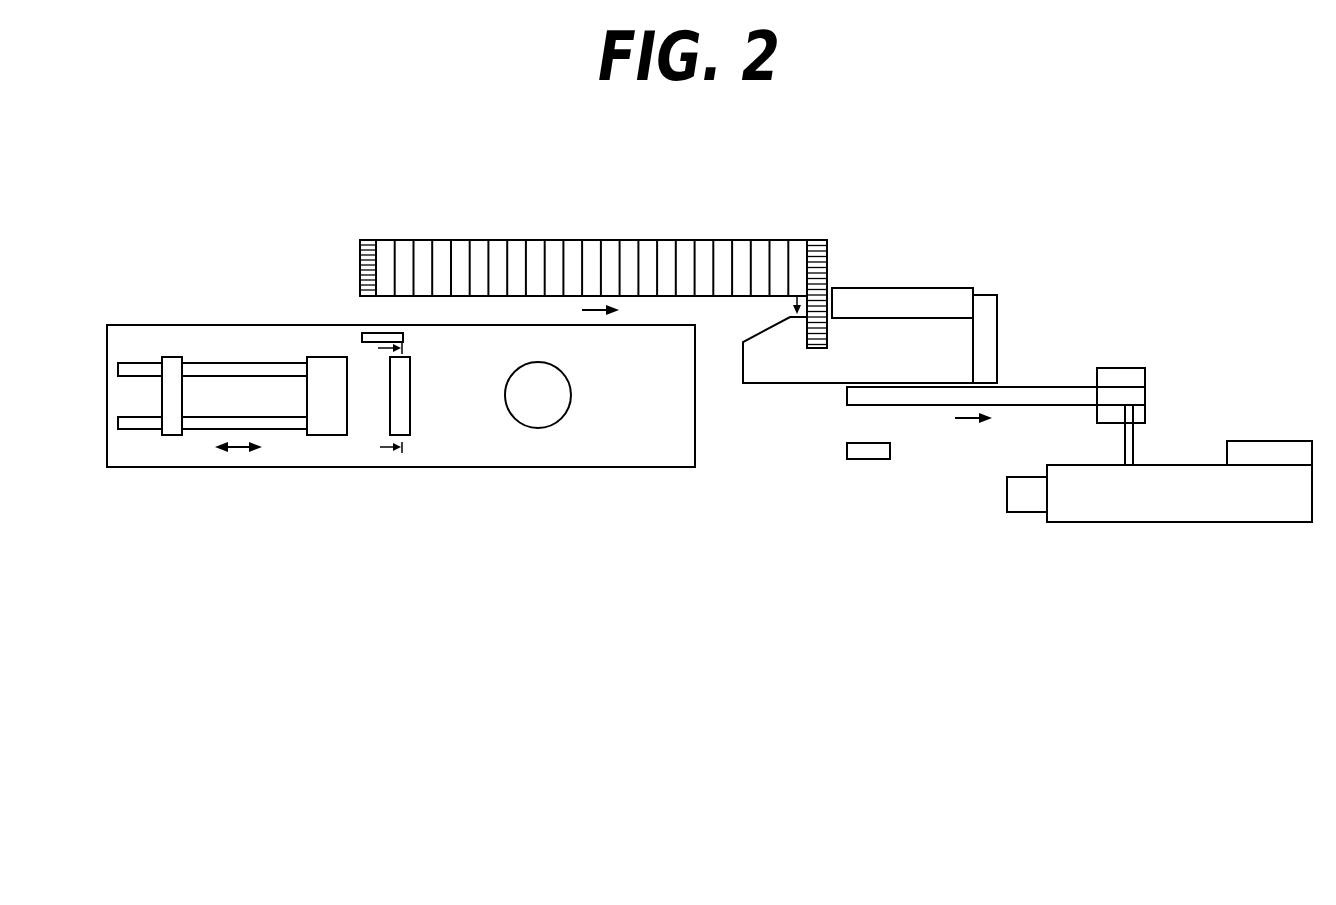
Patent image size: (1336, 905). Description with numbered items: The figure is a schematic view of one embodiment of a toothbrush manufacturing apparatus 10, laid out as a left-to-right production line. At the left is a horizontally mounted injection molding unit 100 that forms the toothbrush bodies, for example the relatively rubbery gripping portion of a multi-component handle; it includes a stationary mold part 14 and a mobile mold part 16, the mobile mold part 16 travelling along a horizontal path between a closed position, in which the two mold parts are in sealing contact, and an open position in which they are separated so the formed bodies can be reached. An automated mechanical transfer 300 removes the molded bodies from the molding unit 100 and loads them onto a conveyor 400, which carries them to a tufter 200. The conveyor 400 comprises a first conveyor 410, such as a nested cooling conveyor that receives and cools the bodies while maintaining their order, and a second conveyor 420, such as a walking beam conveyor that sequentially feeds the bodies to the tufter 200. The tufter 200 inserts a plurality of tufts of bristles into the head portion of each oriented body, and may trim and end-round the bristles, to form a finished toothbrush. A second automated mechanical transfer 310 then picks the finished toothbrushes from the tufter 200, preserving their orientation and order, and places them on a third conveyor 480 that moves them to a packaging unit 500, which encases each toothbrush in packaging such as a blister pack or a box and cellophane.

The toothbrush manufacturing apparatus 10 is at (266, 130).
The horizontally mounted injection molding unit 100 is at (274, 474).
The mobile mold part 16 is at (328, 422).
The stationary mold part 14 is at (402, 415).
The automated mechanical transfer 300 is at (367, 333).
The conveyor 400 is at (617, 222).
The first conveyor 410 is at (447, 240).
The second conveyor 420 is at (828, 267).
The tufter 200 is at (802, 392).
The third conveyor 480 is at (1052, 387).
The second automated mechanical transfer 310 is at (870, 459).
The packaging unit 500 is at (1137, 523).